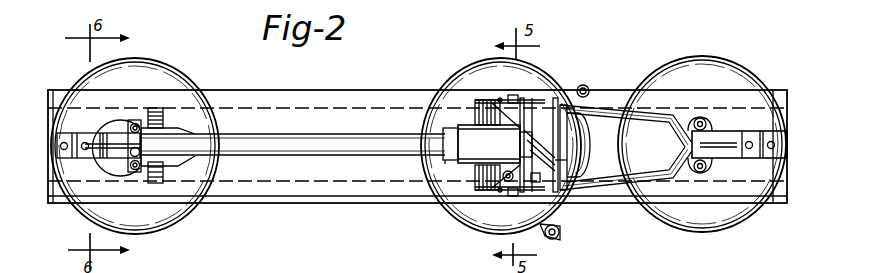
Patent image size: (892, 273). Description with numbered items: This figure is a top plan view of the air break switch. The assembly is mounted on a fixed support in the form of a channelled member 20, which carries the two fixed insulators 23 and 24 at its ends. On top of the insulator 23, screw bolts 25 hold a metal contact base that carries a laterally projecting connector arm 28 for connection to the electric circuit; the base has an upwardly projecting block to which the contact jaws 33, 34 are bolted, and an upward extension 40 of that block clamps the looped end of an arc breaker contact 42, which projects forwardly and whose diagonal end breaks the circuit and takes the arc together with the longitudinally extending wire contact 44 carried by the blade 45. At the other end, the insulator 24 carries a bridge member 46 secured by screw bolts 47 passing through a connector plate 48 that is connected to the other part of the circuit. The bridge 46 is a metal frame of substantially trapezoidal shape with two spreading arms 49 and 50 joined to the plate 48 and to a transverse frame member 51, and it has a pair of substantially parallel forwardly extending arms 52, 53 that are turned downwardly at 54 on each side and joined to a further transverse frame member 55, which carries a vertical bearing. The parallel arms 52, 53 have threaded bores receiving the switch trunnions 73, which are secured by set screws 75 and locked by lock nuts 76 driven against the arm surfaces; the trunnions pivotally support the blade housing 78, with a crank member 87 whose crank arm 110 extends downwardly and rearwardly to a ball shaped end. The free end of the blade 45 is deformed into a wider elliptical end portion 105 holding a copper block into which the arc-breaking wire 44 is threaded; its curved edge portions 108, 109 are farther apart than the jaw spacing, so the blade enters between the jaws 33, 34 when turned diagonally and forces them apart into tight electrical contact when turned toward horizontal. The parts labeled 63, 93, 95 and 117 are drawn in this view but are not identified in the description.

The channelled member 20 is at (283, 198).
The fixed insulator 23 is at (160, 230).
The fixed insulator 24 is at (709, 232).
The screw bolts 25 is at (132, 126).
The connector arm 28 is at (75, 160).
The contact jaw 33 is at (162, 116).
The contact jaw 34 is at (163, 172).
The upward extension 40 is at (112, 140).
The arc breaker contact 42 is at (110, 160).
The wire contact 44 is at (141, 150).
The blade 45 is at (308, 136).
The bridge member 46 is at (650, 111).
The screw bolts 47 is at (703, 119).
The connector plate 48 is at (724, 134).
The spreading arm 49 is at (605, 105).
The spreading arm 50 is at (632, 182).
The transverse frame member 51 is at (580, 138).
The forwardly extending arm 52 is at (540, 99).
The forwardly extending arm 53 is at (546, 193).
The downwardly turned portion 54 is at (476, 102).
The transverse frame member 55 is at (476, 113).
The collar 63 is at (446, 159).
The switch trunnion 73 is at (512, 96).
The set screws 75 is at (519, 96).
The lock nut 76 is at (500, 100).
The blade housing 78 is at (465, 166).
The crank member 87 is at (527, 126).
The collar 93 is at (446, 131).
The cylinder 95 is at (462, 148).
The elliptical end portion 105 is at (160, 133).
The curved edge portion 108 is at (136, 122).
The curved edge portion 109 is at (140, 170).
The crank arm 110 is at (562, 160).
The block 117 is at (538, 182).